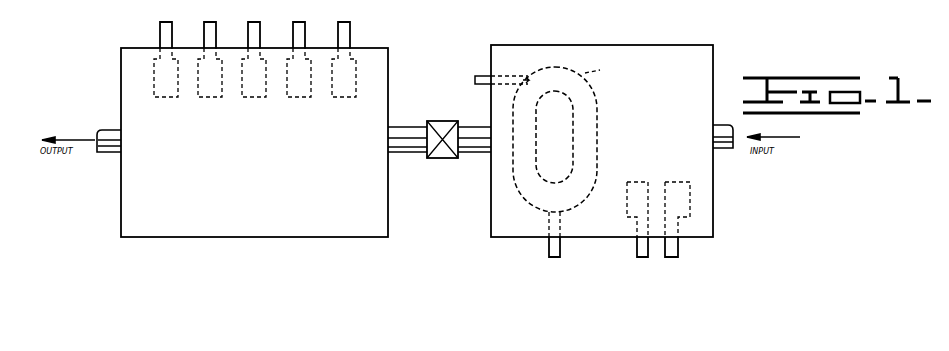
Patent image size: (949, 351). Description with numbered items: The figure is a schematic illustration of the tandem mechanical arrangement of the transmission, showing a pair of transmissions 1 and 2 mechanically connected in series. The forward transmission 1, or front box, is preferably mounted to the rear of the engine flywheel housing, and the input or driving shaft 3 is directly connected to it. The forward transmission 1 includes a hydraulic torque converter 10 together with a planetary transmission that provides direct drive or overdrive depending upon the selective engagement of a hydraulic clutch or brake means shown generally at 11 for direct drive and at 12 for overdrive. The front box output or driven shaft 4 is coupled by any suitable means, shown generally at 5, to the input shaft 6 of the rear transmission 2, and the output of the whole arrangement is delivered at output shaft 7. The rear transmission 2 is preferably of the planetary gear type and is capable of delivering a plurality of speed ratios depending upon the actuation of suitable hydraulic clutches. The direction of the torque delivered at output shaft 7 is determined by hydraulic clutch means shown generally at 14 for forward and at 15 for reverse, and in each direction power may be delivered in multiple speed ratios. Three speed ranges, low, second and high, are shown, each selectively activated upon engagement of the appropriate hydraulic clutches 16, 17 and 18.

The forward transmission 1 is at (656, 131).
The rear transmission 2 is at (44, 0).
The input shaft 3 is at (722, 151).
The output shaft 4 is at (481, 127).
The coupling means 5 is at (448, 160).
The input shaft 6 is at (398, 128).
The output shaft 7 is at (112, 131).
The hydraulic torque converter 10 is at (596, 160).
The hydraulic clutch means 11 is at (634, 222).
The hydraulic brake means 12 is at (690, 203).
The forward hydraulic clutch means 14 is at (352, 62).
The reverse hydraulic clutch means 15 is at (307, 62).
The low-range hydraulic clutch 16 is at (174, 62).
The second-range hydraulic clutch 17 is at (262, 62).
The high-range hydraulic clutch 18 is at (218, 62).